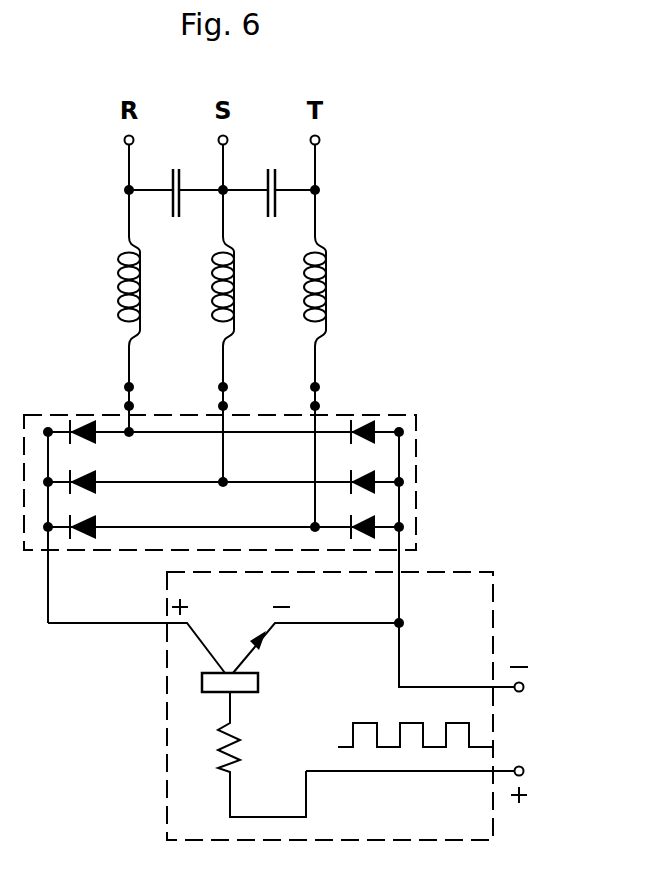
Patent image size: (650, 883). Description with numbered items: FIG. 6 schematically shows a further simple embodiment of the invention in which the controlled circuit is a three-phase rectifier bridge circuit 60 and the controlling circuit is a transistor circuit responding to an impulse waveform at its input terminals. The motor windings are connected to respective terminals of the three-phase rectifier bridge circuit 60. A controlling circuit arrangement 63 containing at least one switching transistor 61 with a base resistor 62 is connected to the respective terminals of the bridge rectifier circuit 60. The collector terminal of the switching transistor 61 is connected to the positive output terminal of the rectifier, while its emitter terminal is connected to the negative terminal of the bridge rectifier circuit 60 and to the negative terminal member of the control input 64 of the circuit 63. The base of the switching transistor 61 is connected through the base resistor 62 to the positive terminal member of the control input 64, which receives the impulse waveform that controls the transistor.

The three-phase rectifier bridge circuit 60 is at (422, 430).
The switching transistor 61 is at (258, 683).
The base resistor 62 is at (232, 746).
The controlling circuit arrangement 63 is at (503, 580).
The control input 64 is at (522, 693).